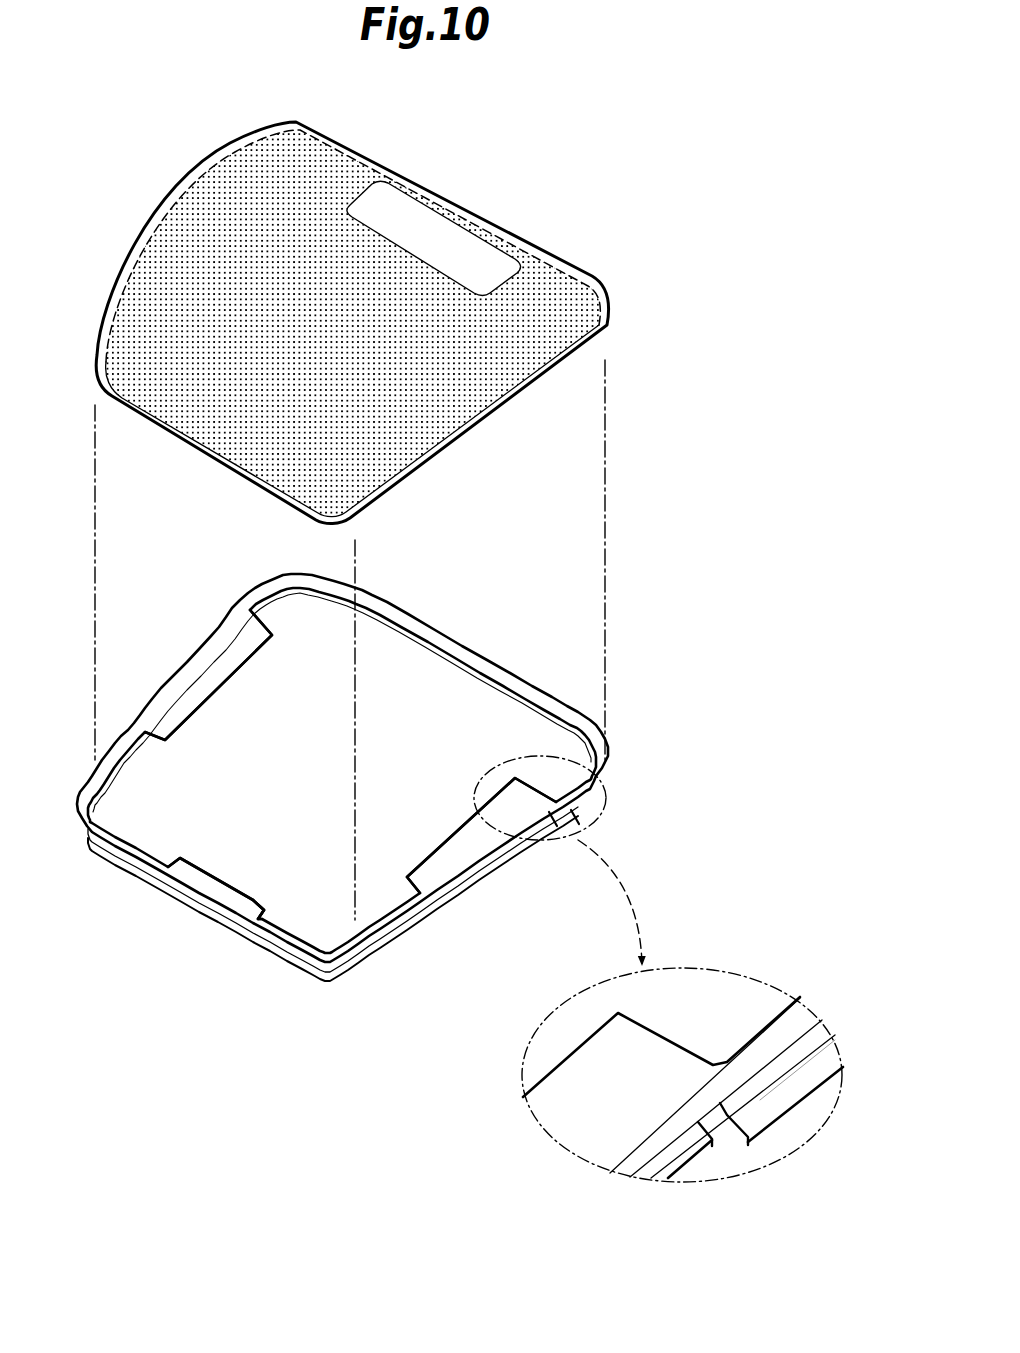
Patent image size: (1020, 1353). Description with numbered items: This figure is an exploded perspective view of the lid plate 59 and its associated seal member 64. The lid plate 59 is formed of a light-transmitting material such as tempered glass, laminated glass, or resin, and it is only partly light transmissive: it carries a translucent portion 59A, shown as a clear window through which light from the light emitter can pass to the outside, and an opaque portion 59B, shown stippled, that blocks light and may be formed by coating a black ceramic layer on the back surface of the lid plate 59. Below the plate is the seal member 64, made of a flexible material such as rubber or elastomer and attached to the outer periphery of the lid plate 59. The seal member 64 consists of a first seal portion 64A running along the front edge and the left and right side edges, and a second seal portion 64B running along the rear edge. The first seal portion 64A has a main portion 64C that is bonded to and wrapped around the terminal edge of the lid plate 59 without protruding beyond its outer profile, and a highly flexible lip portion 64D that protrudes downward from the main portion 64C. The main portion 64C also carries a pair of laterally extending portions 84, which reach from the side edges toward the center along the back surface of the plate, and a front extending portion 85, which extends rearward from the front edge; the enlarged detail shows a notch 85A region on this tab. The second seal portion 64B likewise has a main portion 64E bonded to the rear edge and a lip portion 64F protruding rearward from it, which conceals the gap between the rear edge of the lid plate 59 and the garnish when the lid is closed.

The lid plate 59 is at (496, 226).
The translucent portion 59A is at (425, 235).
The opaque portion 59B is at (467, 400).
The seal member 64 is at (477, 668).
The first seal portion 64A is at (395, 938).
The second seal portion 64B is at (588, 800).
The main portion 64C is at (447, 898).
The lip portion 64D is at (663, 1160).
The main portion 64E is at (608, 760).
The lip portion 64F is at (800, 1077).
The laterally extending portions 84 is at (182, 707).
The front extending portion 85 is at (210, 882).
The notch 85A is at (243, 892).